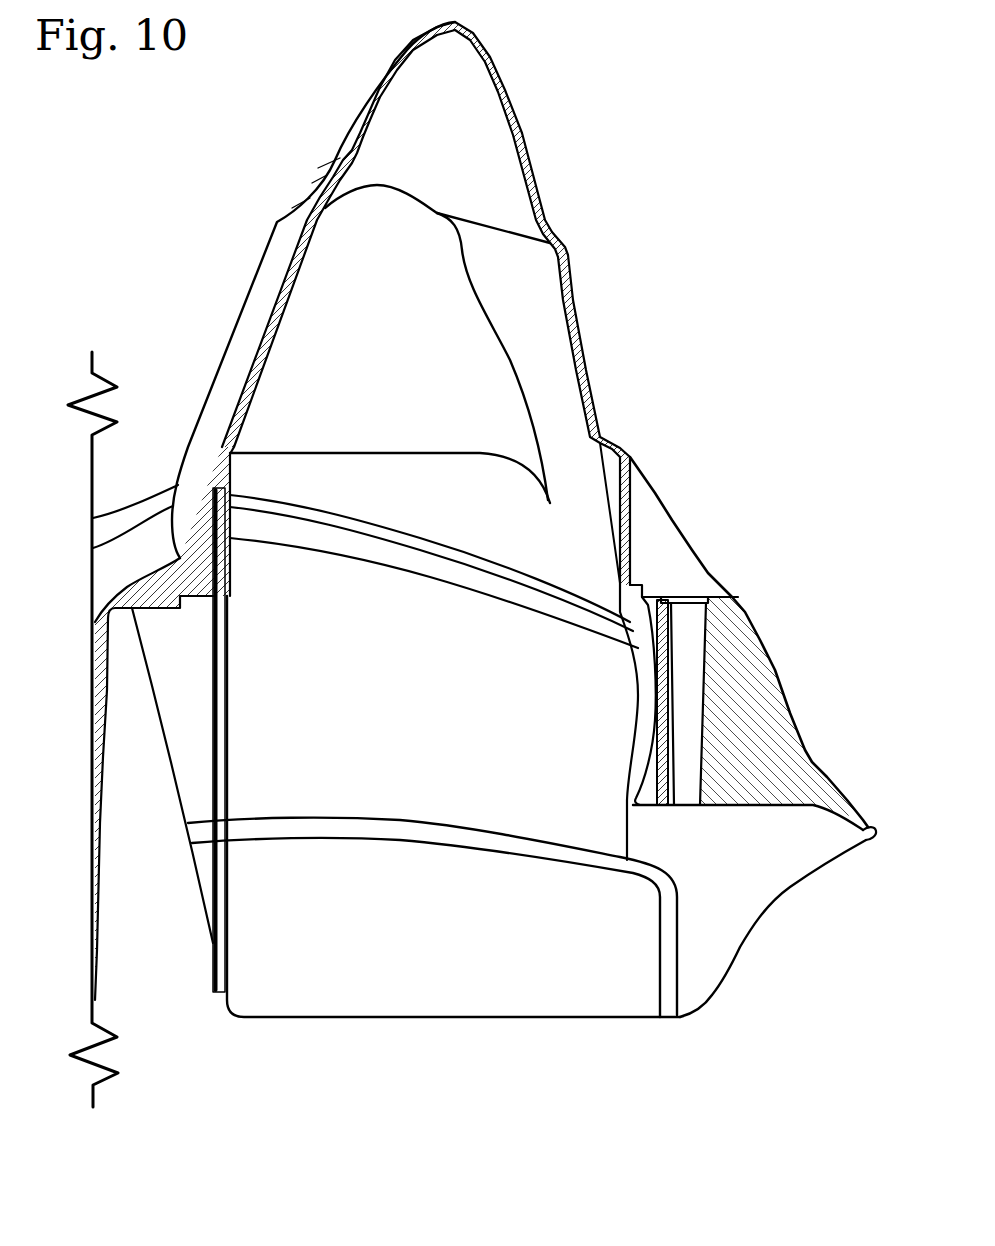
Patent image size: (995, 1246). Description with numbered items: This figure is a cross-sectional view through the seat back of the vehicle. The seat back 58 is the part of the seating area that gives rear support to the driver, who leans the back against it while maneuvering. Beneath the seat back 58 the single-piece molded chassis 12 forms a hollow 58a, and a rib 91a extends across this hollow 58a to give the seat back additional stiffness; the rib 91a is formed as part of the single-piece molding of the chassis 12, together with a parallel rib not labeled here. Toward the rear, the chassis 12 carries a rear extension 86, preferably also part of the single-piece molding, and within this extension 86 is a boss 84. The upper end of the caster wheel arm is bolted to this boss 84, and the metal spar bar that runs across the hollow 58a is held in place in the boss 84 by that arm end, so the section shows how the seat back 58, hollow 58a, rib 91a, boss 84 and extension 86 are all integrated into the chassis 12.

The seat back 58 is at (280, 223).
The hollow under seat back 58a is at (443, 962).
The rib 91a is at (462, 328).
The chassis 12 is at (160, 522).
The boss 84 is at (682, 597).
The rear extension 86 is at (765, 695).